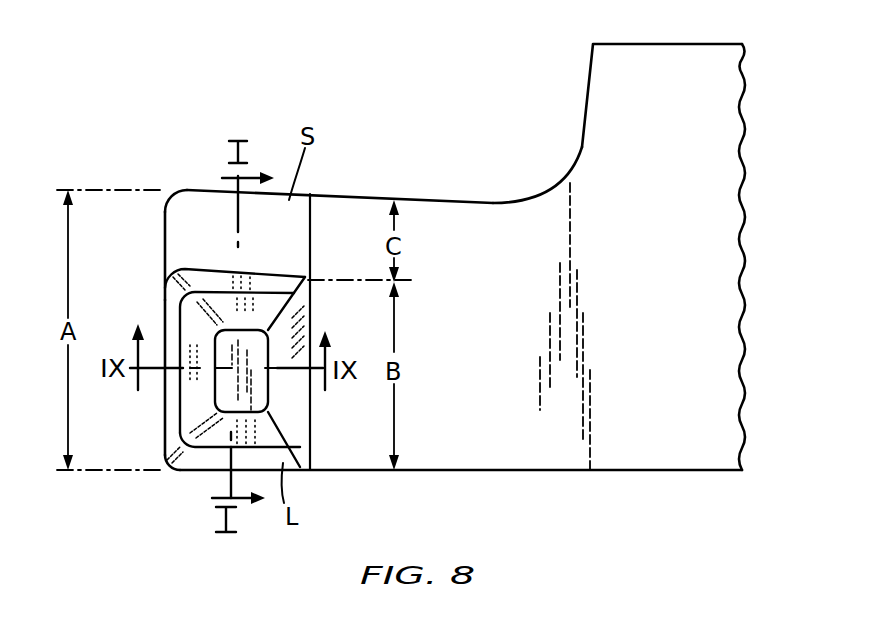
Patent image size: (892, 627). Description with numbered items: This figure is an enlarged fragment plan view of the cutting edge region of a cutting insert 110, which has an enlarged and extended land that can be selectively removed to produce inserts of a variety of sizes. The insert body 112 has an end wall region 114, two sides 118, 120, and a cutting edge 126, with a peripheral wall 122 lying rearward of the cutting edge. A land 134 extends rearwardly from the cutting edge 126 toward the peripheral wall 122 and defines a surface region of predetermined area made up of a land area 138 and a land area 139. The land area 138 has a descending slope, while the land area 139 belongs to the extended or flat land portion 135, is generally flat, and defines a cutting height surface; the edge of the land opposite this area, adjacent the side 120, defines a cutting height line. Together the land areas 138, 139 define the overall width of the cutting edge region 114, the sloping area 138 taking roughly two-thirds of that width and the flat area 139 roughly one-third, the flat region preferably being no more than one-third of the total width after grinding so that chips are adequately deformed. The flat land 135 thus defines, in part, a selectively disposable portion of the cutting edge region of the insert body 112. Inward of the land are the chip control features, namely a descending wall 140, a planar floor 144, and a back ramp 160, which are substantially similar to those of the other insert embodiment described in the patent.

The insert 110 is at (409, 95).
The insert body 112 is at (727, 397).
The end wall region 114 is at (165, 307).
The side 118 is at (493, 202).
The side 120 is at (578, 470).
The peripheral wall 122 is at (445, 455).
The cutting edge 126 is at (165, 412).
The land 134 is at (167, 288).
The flat land portion 135 is at (182, 220).
The land area 138 is at (177, 473).
The land area 139 is at (187, 190).
The descending wall 140 is at (200, 445).
The planar floor 144 is at (237, 390).
The back ramp 160 is at (295, 312).